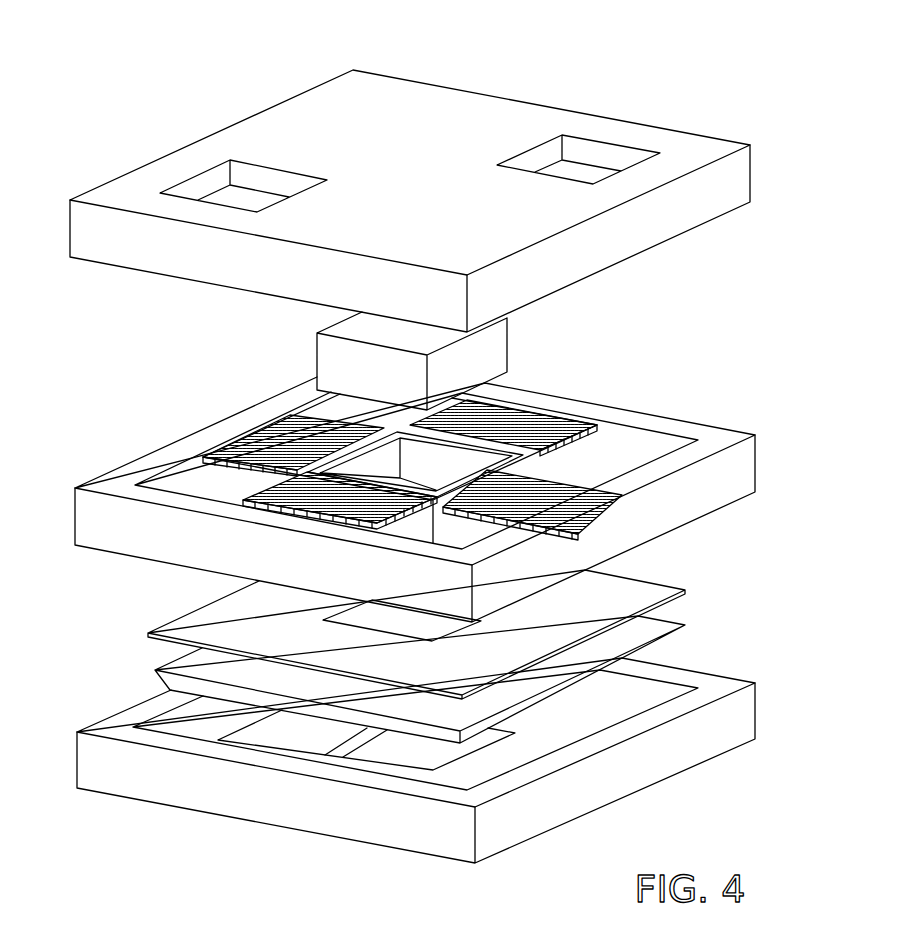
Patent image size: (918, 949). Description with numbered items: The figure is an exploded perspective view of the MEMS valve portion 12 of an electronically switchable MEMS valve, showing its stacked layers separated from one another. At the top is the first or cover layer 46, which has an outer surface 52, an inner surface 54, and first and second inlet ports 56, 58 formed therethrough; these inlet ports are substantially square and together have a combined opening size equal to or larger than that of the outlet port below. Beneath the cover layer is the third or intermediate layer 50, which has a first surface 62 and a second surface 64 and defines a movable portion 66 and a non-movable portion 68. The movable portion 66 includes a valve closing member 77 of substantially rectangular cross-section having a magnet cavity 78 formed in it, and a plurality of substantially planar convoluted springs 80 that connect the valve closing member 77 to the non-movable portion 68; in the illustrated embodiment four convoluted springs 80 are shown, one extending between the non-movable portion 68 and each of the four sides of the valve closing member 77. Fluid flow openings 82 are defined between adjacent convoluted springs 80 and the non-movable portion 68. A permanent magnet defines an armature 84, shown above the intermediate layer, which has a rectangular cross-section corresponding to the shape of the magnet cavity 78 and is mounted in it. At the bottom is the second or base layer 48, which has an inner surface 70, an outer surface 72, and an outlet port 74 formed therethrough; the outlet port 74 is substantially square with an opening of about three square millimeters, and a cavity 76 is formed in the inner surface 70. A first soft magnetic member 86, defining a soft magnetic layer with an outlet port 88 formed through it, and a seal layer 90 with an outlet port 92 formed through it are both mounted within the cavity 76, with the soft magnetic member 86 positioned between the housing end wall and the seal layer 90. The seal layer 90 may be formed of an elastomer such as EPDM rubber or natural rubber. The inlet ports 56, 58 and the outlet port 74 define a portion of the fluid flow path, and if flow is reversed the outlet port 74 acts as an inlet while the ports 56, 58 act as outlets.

The MEMS valve portion 12 is at (139, 80).
The cover layer 46 is at (452, 180).
The base layer 48 is at (437, 784).
The intermediate layer 50 is at (421, 487).
The outer surface 52 is at (415, 103).
The inner surface 54 is at (110, 263).
The first inlet port 56 is at (205, 188).
The second inlet port 58 is at (598, 153).
The first surface 62 is at (670, 425).
The second surface 64 is at (88, 548).
The movable portion 66 is at (470, 530).
The non-movable portion 68 is at (98, 489).
The inner surface 70 is at (107, 729).
The outer surface 72 is at (110, 793).
The outlet port 74 is at (400, 755).
The cavity 76 is at (300, 737).
The valve closing member 77 is at (370, 468).
The magnet cavity 78 is at (393, 432).
The convoluted springs 80 is at (440, 457).
The fluid flow openings 82 is at (390, 460).
The armature 84 is at (508, 343).
The first soft magnetic member 86 is at (680, 630).
The outlet port 88 is at (432, 634).
The seal layer 90 is at (667, 590).
The outlet port 92 is at (395, 625).